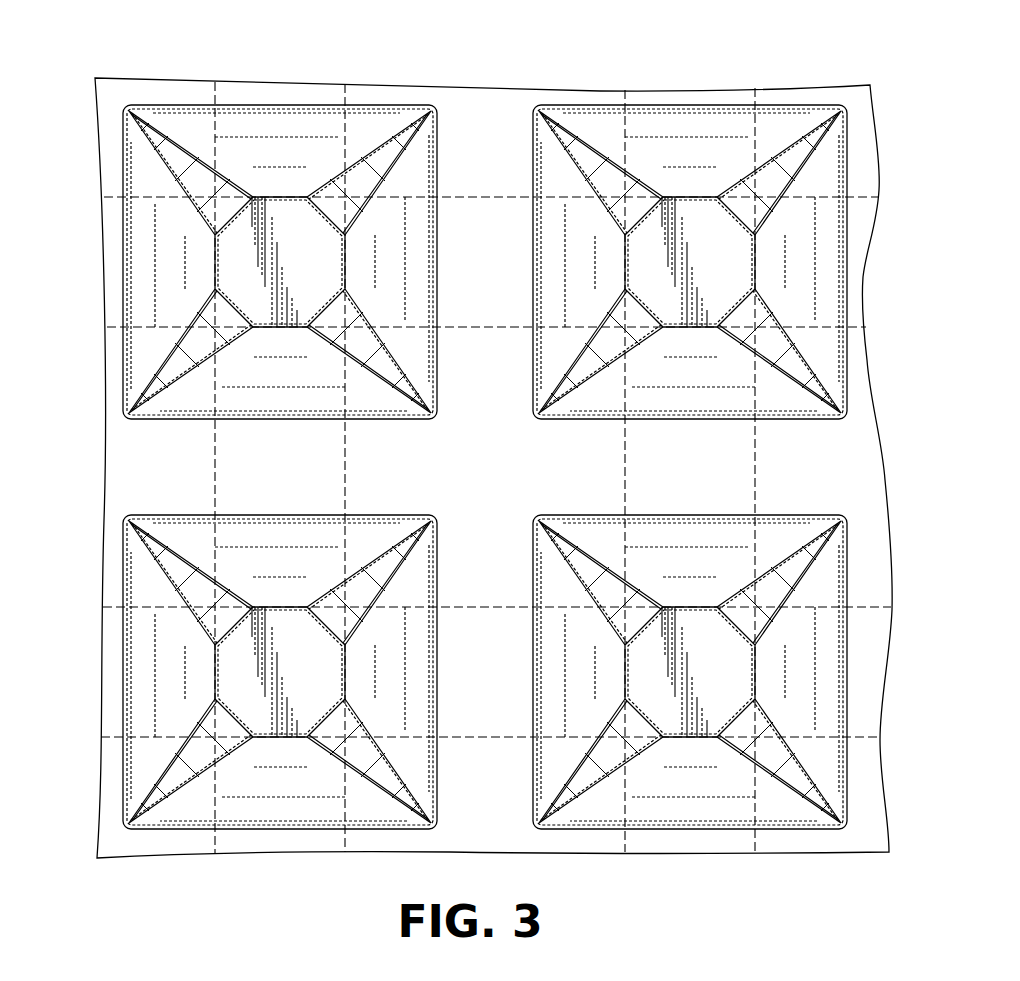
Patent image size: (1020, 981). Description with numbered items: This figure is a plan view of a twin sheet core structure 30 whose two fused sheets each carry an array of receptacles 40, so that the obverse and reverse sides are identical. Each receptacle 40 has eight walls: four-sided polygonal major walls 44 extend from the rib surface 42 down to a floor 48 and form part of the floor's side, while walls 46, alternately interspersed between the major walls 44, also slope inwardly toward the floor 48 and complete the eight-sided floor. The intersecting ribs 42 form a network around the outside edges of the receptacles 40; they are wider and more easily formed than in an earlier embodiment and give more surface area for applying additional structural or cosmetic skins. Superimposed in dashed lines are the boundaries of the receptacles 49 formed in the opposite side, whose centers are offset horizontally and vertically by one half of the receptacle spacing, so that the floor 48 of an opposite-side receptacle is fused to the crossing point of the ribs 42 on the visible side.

The twin sheet core structure 30 is at (557, 90).
The receptacles 40 is at (795, 515).
The rib surface 42 is at (499, 669).
The major walls 44 is at (605, 808).
The walls 46 is at (800, 785).
The floor 48 is at (674, 722).
The receptacles 49 is at (215, 375).